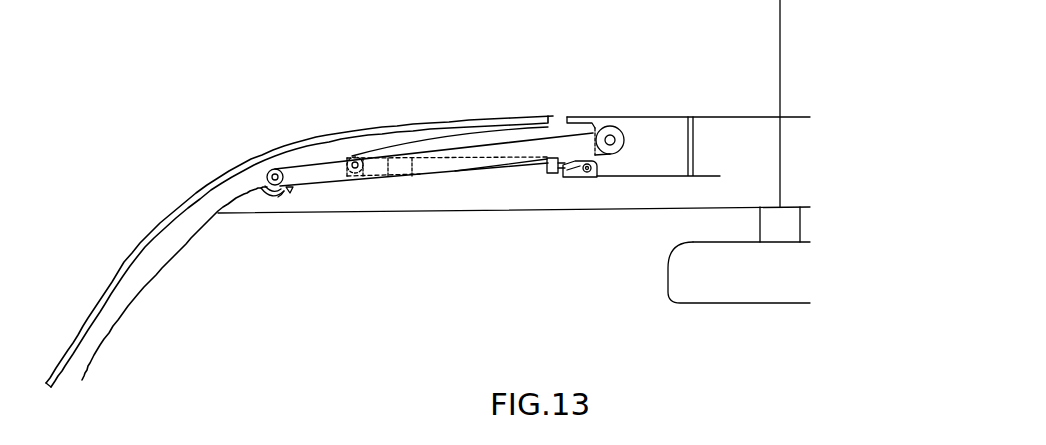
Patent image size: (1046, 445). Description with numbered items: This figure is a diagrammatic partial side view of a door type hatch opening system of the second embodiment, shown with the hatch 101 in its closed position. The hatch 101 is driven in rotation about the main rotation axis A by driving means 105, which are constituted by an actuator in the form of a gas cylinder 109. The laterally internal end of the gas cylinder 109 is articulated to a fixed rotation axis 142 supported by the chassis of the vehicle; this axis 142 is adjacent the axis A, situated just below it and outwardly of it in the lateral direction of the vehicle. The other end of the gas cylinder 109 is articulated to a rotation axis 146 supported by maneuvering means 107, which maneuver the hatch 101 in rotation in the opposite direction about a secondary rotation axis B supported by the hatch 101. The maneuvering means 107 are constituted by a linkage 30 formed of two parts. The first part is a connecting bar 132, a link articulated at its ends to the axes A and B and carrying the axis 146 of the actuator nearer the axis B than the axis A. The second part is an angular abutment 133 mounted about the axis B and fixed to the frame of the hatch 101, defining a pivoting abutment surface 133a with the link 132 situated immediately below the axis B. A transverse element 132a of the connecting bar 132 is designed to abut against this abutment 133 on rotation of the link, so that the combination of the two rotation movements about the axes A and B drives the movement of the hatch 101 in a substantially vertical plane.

The hatch 101 is at (299, 208).
The linkage 30 is at (322, 140).
The maneuvering means 107 is at (420, 169).
The secondary rotation axis B is at (275, 175).
The main rotation axis A is at (611, 138).
The rotation axis 146 is at (355, 160).
The connecting bar 132 is at (355, 176).
The transverse element 132a is at (292, 200).
The angular abutment 133 is at (262, 196).
The pivoting abutment surface 133a is at (281, 198).
The driving means 105 is at (510, 233).
The gas cylinder 109 is at (546, 174).
The rotation axis 142 is at (594, 178).